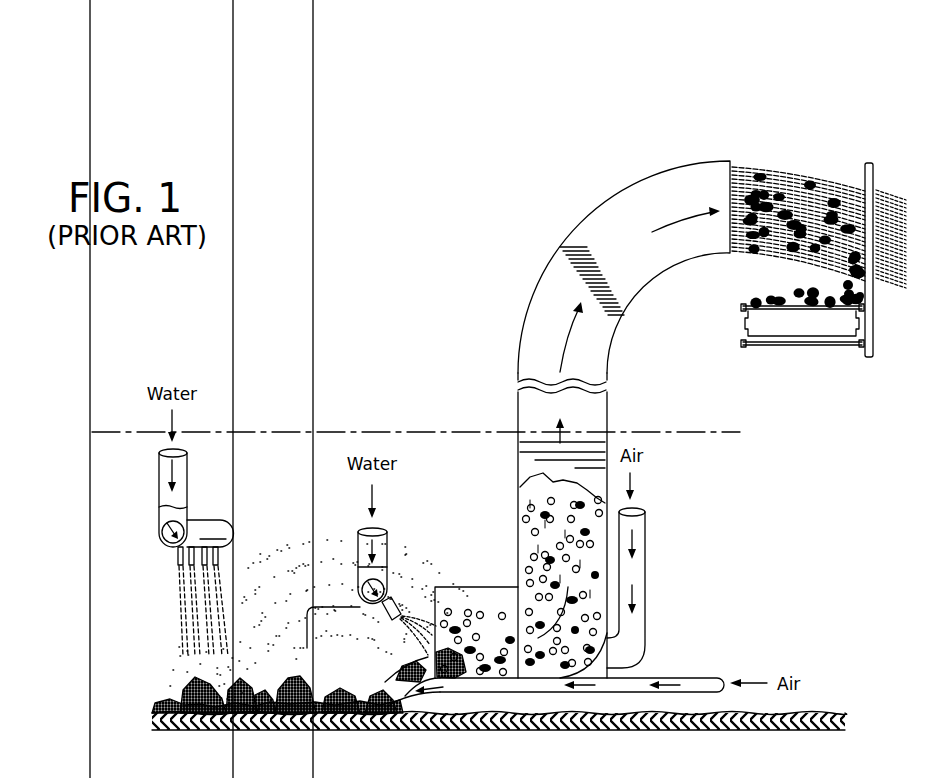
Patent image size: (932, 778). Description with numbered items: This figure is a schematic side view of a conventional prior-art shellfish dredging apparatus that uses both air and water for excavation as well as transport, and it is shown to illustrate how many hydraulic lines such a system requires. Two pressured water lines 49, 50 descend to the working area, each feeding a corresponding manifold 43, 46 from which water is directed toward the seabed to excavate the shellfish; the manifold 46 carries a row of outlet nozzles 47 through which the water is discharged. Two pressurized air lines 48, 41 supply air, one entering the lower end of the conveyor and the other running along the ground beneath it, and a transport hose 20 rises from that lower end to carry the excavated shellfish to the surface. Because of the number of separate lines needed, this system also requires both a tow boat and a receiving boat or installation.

The transport hose 20 is at (688, 615).
The pressurized air line 41 is at (693, 677).
The manifold 43 is at (387, 587).
The manifold 46 is at (208, 527).
The water nozzles 47 is at (220, 556).
The pressurized air line 48 is at (647, 543).
The pressured water line 49 is at (387, 543).
The pressured water line 50 is at (187, 485).